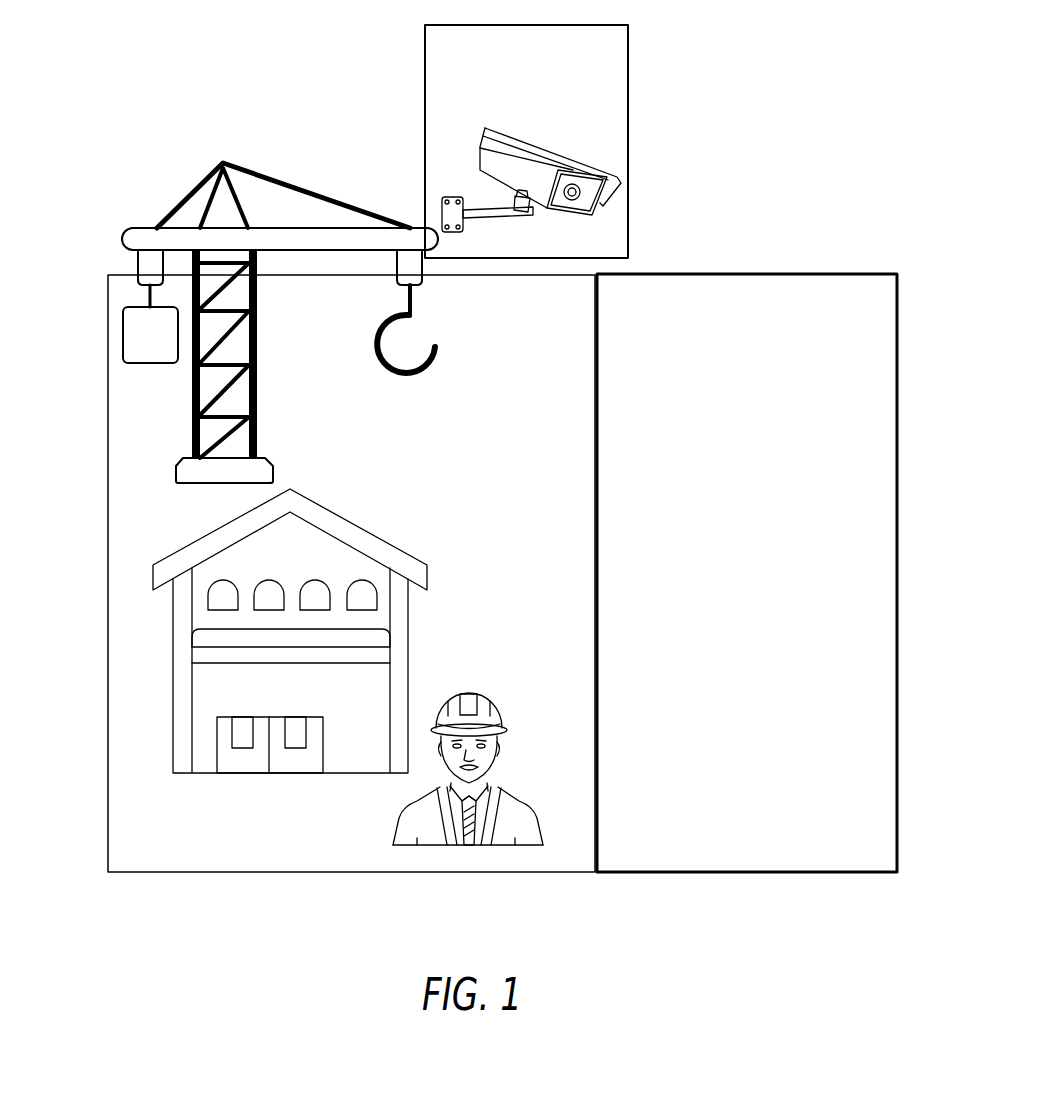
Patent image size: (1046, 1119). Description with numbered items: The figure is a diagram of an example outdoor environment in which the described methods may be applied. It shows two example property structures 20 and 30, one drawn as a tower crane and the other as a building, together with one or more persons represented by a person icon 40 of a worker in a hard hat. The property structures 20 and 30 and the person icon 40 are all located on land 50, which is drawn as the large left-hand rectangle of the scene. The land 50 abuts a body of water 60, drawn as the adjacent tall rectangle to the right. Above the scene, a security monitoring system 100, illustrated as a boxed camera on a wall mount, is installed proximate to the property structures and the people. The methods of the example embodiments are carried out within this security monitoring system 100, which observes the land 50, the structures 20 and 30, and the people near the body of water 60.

The property structure 20 is at (190, 193).
The property structure 30 is at (173, 675).
The person icon 40 is at (402, 813).
The land 50 is at (560, 825).
The body of water 60 is at (865, 577).
The security monitoring system 100 is at (628, 140).